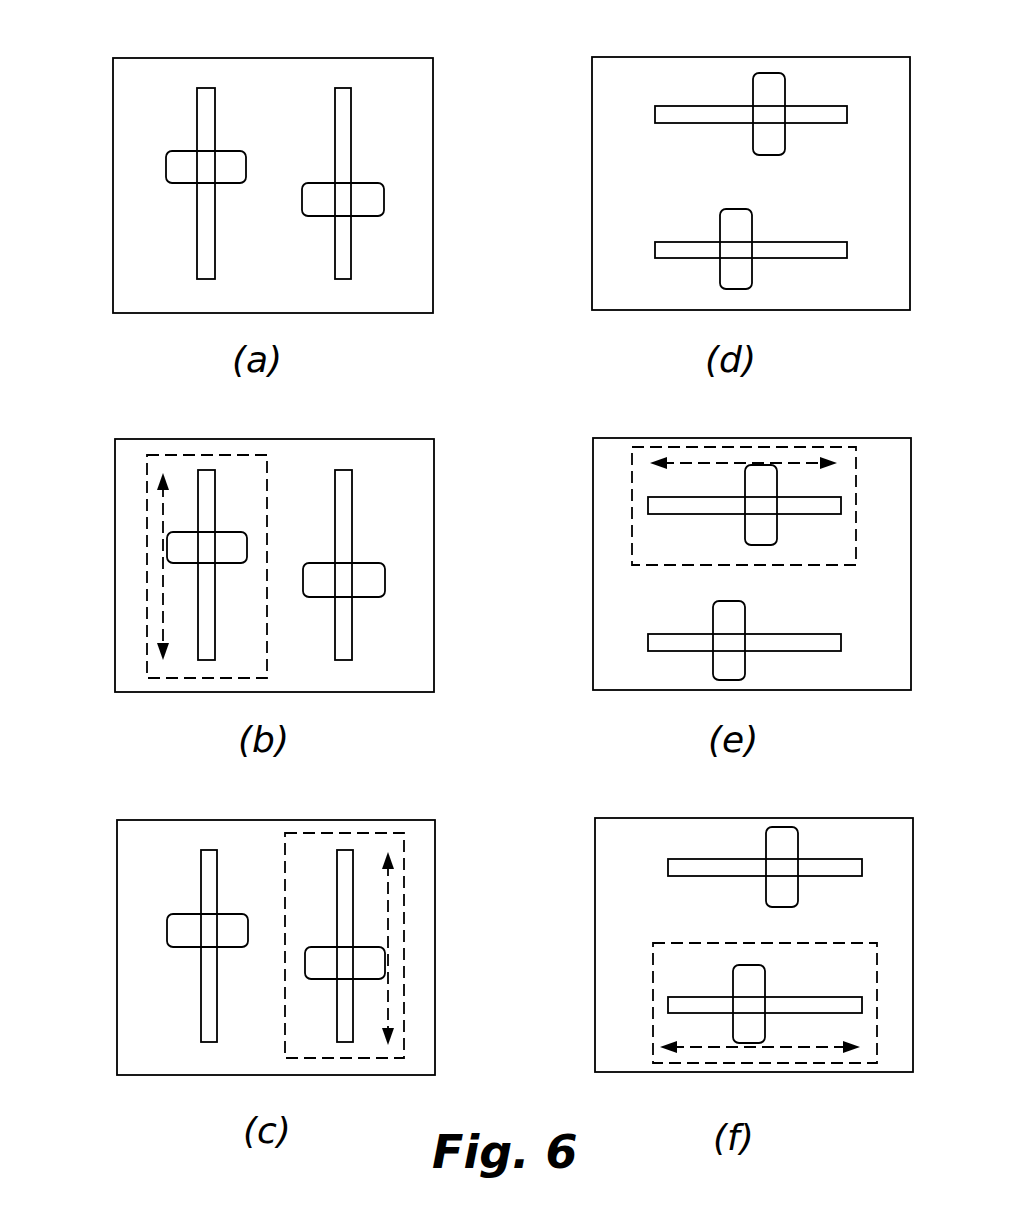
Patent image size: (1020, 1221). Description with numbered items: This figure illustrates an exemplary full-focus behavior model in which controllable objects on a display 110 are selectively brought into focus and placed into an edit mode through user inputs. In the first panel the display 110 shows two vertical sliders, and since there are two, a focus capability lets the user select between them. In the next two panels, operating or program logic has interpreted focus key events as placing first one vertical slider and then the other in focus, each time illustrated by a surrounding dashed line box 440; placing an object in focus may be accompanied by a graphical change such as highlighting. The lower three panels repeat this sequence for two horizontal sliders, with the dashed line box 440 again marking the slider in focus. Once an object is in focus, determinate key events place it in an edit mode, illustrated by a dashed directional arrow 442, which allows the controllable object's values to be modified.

The display 110 is at (433, 172).
The dashed line box 440 is at (147, 502).
The dashed directional arrow 442 is at (162, 603).